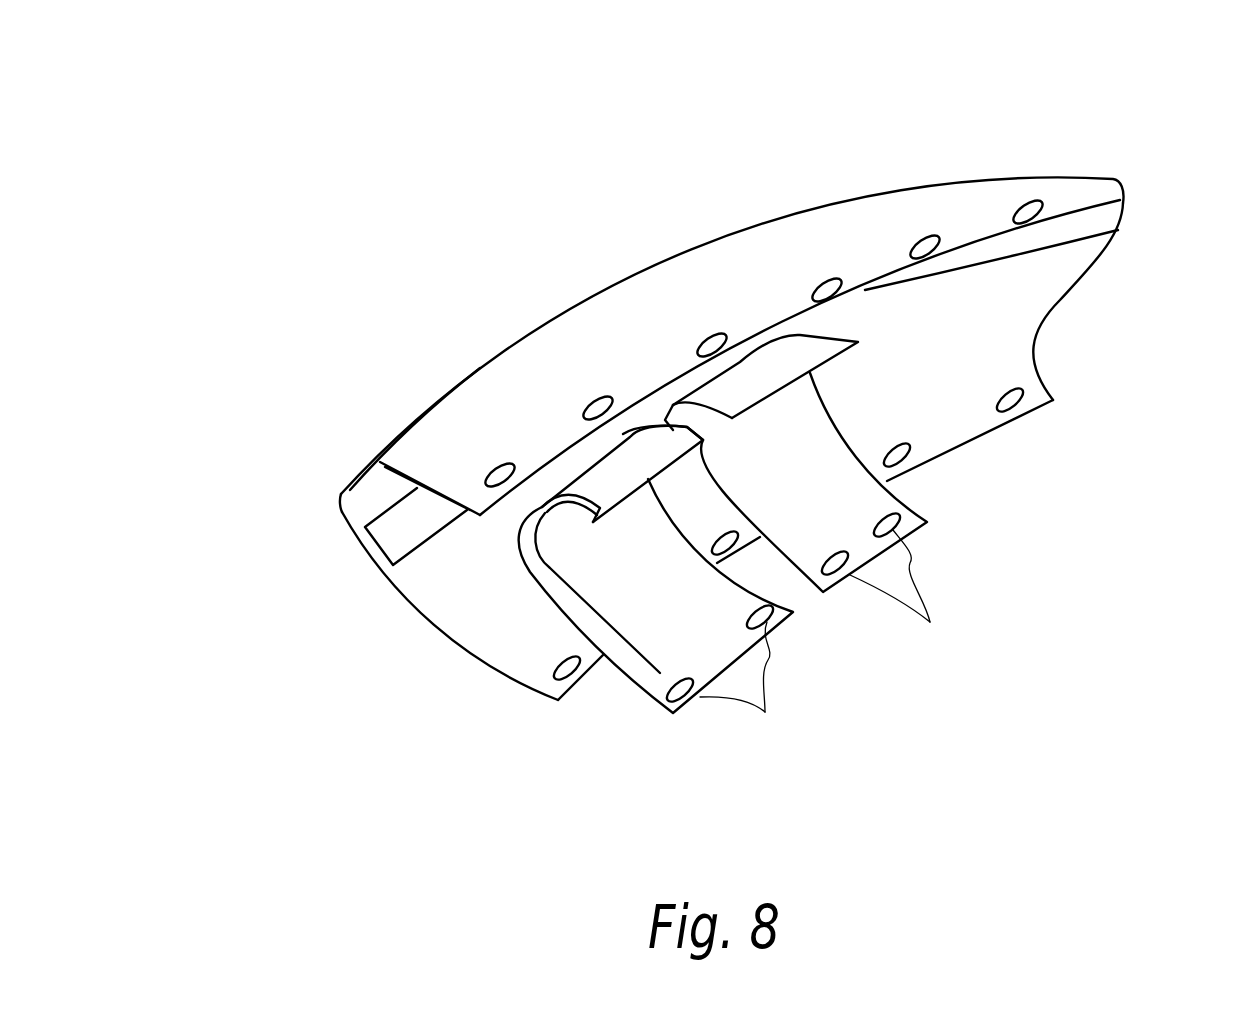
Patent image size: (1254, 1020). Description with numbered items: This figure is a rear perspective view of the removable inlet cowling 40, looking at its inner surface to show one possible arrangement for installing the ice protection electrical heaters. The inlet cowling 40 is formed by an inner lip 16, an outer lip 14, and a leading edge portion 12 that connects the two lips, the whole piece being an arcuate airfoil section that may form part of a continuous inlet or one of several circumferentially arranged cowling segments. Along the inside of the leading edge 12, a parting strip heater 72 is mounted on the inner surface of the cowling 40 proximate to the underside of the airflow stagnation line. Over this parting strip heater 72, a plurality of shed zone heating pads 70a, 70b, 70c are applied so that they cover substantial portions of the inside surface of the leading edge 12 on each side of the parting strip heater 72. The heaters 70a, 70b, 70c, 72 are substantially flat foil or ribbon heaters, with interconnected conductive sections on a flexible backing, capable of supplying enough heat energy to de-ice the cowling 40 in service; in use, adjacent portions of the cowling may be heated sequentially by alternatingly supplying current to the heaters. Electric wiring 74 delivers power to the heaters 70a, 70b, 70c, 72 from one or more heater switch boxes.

The inlet cowling 40 is at (226, 172).
The inner lip 16 is at (785, 238).
The leading edge portion 12 is at (340, 498).
The outer lip 14 is at (468, 613).
The parting strip heater 72 is at (1073, 225).
The shed zone heating pad 70a is at (637, 690).
The shed zone heating pad 70b is at (893, 487).
The shed zone heating pad 70c is at (740, 387).
The electric wiring 74 is at (768, 660).